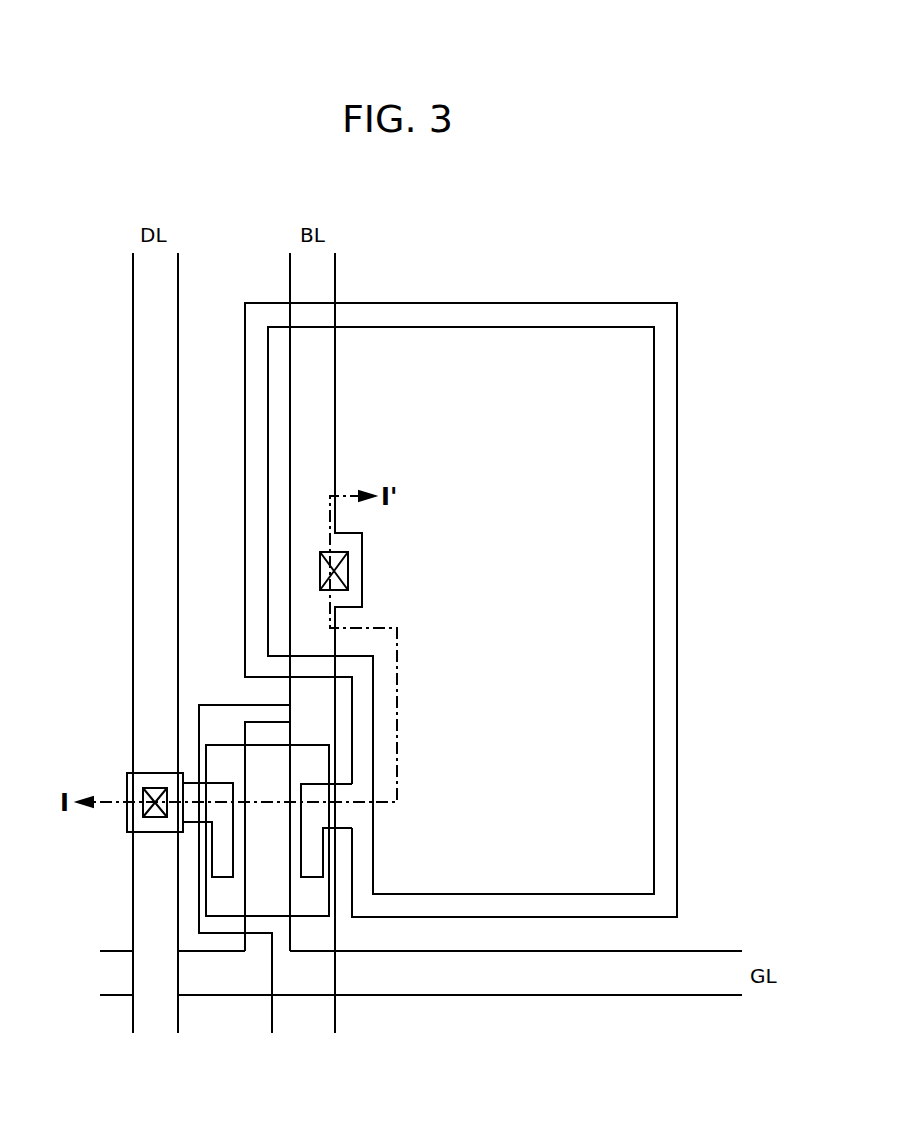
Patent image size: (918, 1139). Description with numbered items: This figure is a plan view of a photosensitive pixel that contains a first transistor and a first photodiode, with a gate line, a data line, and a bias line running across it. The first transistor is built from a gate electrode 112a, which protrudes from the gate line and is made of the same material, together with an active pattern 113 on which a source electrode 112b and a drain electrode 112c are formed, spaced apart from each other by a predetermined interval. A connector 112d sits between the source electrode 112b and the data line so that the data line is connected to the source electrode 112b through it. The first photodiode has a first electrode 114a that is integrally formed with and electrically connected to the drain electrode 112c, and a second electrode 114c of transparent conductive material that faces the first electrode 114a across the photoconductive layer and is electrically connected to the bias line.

The gate electrode 112a is at (263, 733).
The source electrode 112b is at (223, 861).
The drain electrode 112c is at (312, 862).
The connector 112d is at (126, 823).
The active pattern 113 is at (223, 899).
The first electrode 114a is at (497, 905).
The second electrode 114c is at (613, 873).